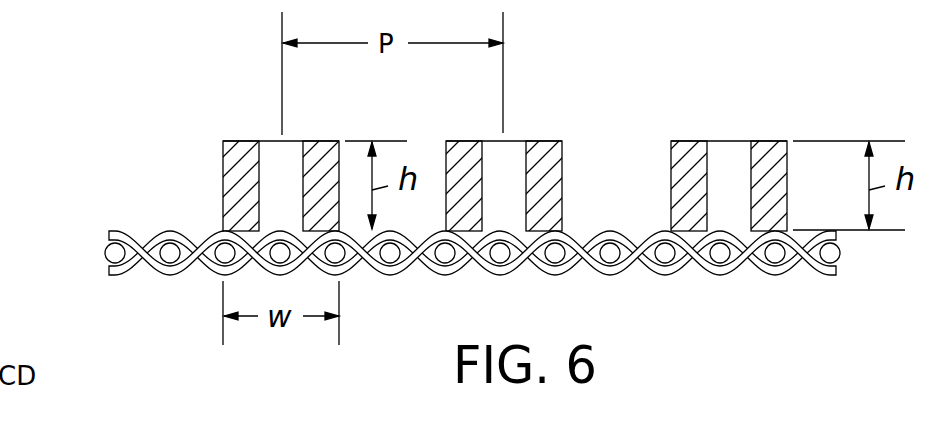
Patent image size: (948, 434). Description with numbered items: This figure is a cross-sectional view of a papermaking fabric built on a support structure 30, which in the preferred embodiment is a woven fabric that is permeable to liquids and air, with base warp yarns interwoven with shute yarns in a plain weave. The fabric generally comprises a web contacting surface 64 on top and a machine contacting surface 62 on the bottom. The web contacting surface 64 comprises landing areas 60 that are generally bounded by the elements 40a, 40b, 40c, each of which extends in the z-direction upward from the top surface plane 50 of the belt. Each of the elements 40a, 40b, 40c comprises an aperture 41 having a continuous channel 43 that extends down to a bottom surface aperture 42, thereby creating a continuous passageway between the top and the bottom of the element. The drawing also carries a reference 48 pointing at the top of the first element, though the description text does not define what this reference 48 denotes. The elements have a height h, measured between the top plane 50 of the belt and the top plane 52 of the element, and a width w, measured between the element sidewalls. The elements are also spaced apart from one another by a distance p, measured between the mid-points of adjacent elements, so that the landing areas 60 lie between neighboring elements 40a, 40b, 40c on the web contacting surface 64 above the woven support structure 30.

The support structure 30 is at (472, 287).
The element 40a is at (238, 141).
The element 40b is at (462, 141).
The element 40c is at (696, 153).
The aperture 41 is at (728, 155).
The bottom surface aperture 42 is at (745, 263).
The continuous channel 43 is at (723, 200).
The top surface of raised element 48 is at (264, 112).
The top surface plane of the belt 50 is at (856, 232).
The top plane of the element 52 is at (831, 141).
The landing area 60 is at (601, 130).
The machine contacting surface 62 is at (189, 300).
The web contacting surface 64 is at (745, 52).